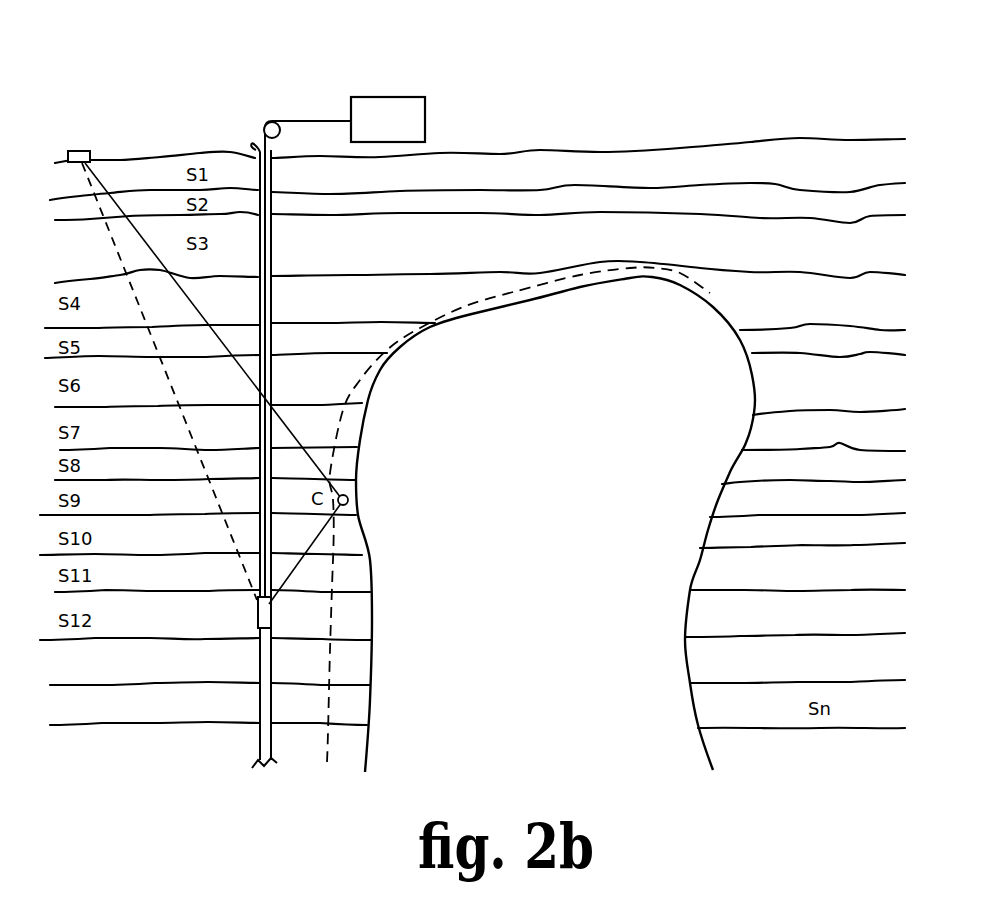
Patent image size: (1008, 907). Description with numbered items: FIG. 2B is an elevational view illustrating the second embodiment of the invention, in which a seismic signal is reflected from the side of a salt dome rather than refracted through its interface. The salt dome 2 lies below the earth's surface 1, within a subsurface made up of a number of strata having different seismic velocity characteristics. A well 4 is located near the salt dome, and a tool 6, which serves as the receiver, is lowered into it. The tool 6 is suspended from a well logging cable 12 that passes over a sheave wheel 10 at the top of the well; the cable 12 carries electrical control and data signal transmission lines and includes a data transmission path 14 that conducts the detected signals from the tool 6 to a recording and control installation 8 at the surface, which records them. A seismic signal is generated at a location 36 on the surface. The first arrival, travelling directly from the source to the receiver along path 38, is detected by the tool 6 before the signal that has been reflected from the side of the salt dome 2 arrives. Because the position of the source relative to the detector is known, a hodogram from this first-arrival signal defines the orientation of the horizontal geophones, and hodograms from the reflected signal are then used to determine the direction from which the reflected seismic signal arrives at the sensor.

The earth's surface 1 is at (683, 148).
The salt dome 2 is at (727, 322).
The well 4 is at (258, 292).
The tool 6 is at (273, 612).
The recording and control installation 8 is at (415, 97).
The sheave wheel 10 is at (281, 132).
The well logging cable 12 is at (258, 150).
The data transmission path 14 is at (304, 120).
The source location 36 is at (80, 149).
The direct travel path 38 is at (174, 394).